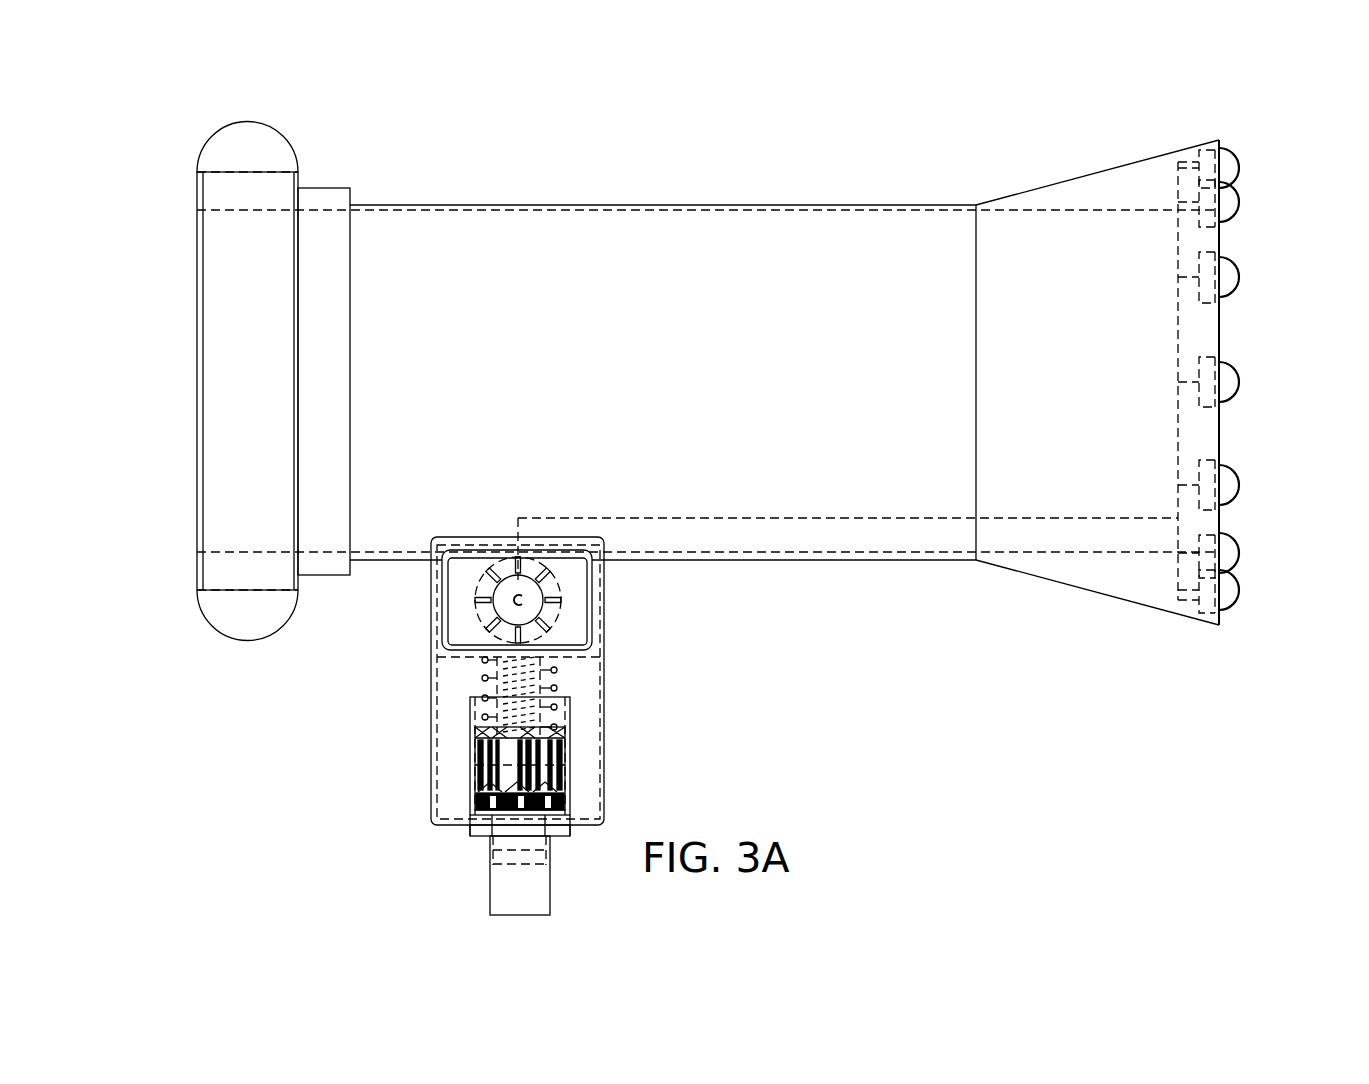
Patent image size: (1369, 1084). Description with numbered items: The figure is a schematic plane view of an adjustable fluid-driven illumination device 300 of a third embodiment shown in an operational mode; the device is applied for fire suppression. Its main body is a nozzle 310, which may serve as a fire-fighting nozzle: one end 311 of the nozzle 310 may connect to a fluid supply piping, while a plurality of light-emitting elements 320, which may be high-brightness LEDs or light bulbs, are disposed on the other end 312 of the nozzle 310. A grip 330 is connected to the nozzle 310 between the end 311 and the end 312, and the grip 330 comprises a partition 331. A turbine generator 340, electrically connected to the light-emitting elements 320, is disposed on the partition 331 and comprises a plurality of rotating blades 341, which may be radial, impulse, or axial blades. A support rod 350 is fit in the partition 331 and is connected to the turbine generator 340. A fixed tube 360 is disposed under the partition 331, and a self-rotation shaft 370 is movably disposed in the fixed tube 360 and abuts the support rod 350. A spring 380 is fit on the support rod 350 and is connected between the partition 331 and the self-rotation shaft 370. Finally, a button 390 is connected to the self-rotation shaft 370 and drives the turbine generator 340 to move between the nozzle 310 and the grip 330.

The adjustable fluid-driven illumination device 300 is at (153, 150).
The nozzle 310 is at (662, 205).
The one end of the nozzle 311 is at (197, 378).
The other end of the nozzle 312 is at (1220, 432).
The light-emitting elements 320 is at (1239, 487).
The grip 330 is at (432, 727).
The partition 331 is at (603, 665).
The turbine generator 340 is at (603, 600).
The rotating blades 341 is at (594, 628).
The support rod 350 is at (560, 680).
The fixed tube 360 is at (567, 715).
The self-rotation shaft 370 is at (567, 778).
The spring 380 is at (482, 677).
The button 390 is at (490, 887).